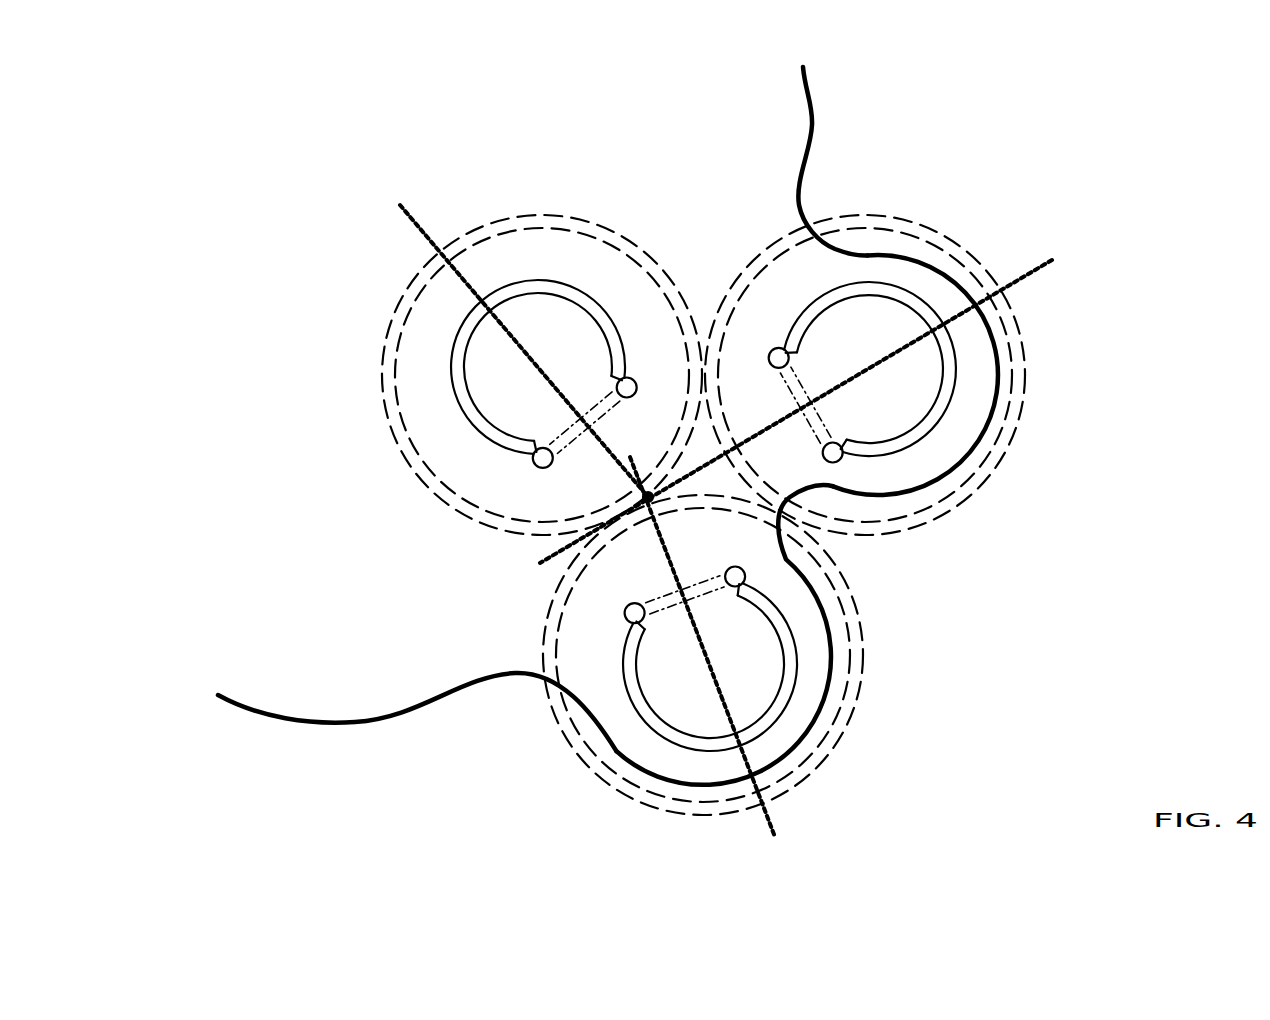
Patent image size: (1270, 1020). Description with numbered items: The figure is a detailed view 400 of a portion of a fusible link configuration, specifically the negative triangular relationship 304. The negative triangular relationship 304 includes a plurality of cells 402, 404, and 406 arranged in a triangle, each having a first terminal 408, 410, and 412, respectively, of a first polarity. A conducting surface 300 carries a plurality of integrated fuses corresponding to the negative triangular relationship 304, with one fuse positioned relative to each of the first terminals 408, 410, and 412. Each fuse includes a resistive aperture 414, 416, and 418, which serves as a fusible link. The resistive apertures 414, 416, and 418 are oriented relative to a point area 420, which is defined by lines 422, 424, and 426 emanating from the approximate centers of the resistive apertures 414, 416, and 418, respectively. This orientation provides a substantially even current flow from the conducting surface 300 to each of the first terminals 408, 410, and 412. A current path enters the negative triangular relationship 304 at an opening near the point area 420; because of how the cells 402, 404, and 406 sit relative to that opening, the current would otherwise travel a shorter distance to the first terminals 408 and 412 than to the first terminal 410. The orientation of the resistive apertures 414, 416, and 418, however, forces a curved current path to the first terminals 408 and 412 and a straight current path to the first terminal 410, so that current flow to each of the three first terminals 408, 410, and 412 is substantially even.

The conducting surface 300 is at (347, 725).
The negative triangular relationship 304 is at (324, 492).
The detailed view 400 is at (251, 116).
The cell 402 is at (522, 213).
The cell 404 is at (862, 638).
The cell 406 is at (980, 478).
The first terminal 408 is at (580, 237).
The first terminal 410 is at (993, 402).
The first terminal 412 is at (837, 707).
The resistive aperture 414 is at (572, 423).
The resistive aperture 416 is at (793, 362).
The resistive aperture 418 is at (658, 618).
The point area 420 is at (645, 511).
The line 422 is at (413, 223).
The line 424 is at (773, 827).
The line 426 is at (1028, 273).